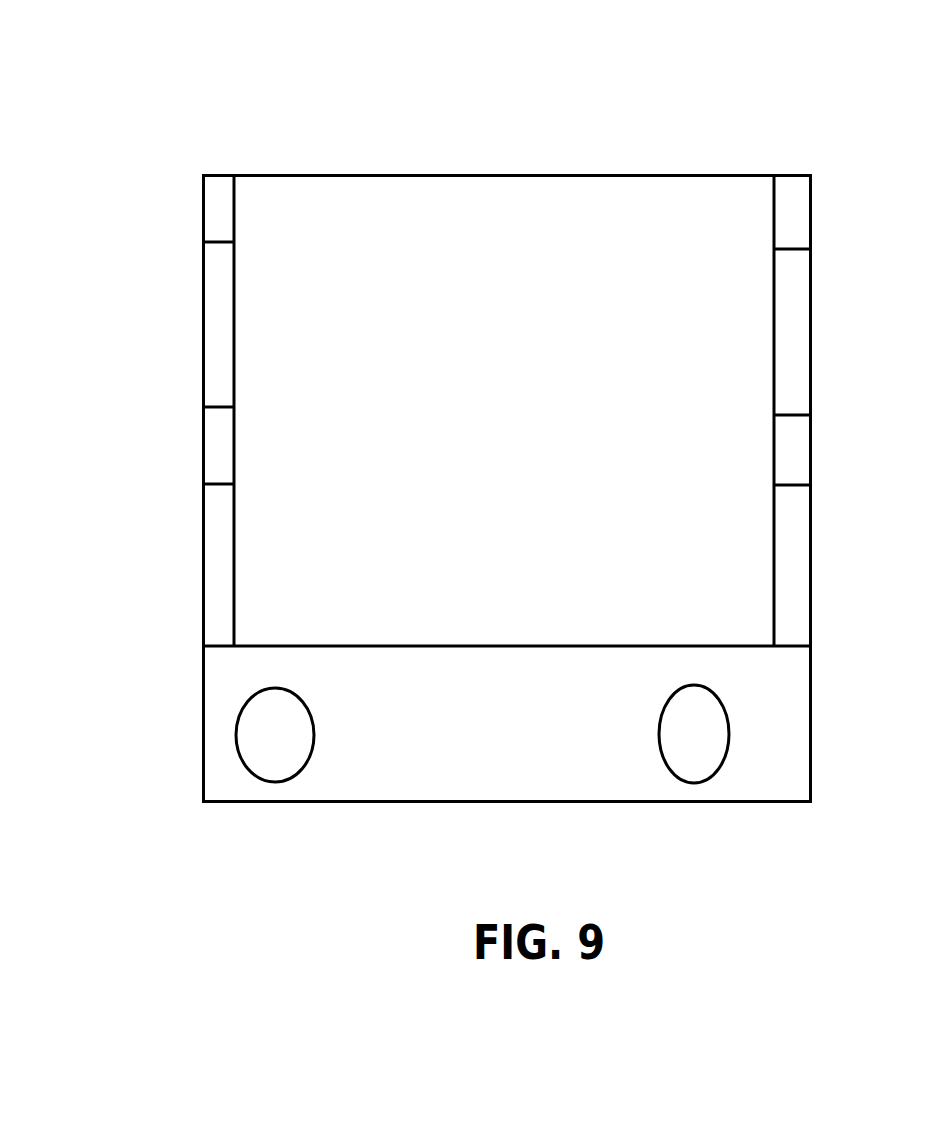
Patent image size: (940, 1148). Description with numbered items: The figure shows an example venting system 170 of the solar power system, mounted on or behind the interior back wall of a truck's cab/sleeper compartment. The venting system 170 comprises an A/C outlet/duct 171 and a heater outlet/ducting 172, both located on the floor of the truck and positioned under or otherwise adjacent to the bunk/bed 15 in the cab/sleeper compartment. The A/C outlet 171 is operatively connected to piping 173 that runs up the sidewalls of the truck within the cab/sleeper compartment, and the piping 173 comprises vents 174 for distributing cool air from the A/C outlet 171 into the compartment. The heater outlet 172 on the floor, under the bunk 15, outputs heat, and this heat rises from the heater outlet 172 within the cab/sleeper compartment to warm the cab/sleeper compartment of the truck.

The venting system 170 is at (503, 422).
The piping 173 is at (503, 411).
The vents 174 is at (232, 217).
The bunk/bed 15 is at (521, 612).
The A/C outlet/duct 171 is at (308, 711).
The heater outlet/ducting 172 is at (660, 721).